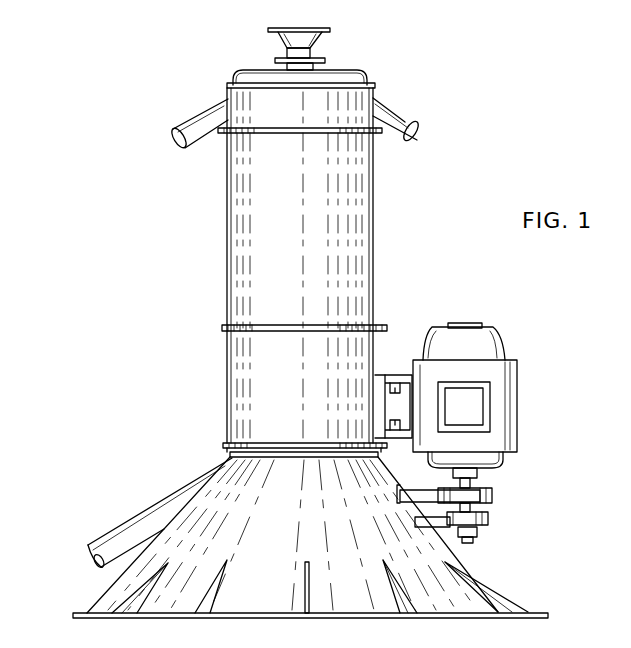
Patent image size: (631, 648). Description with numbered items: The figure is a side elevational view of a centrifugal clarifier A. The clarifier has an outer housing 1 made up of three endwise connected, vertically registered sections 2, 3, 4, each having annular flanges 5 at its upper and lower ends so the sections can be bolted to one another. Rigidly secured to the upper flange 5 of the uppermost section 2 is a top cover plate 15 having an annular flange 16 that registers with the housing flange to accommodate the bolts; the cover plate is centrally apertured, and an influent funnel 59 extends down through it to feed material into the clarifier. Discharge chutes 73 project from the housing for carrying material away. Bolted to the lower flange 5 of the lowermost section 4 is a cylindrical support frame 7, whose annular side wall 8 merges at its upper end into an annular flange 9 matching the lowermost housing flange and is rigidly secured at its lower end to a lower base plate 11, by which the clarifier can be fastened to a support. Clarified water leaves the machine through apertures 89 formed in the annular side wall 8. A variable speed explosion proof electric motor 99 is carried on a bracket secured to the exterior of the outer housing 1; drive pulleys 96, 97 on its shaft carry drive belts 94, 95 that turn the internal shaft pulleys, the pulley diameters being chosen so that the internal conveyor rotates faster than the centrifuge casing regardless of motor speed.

The outer housing 1 is at (383, 234).
The uppermost section 2 is at (363, 93).
The intermediate section 3 is at (228, 290).
The lowermost section 4 is at (228, 378).
The annular flanges 5 is at (222, 135).
The cylindrical support frame 7 is at (183, 610).
The annular side wall 8 is at (245, 602).
The annular flange 9 is at (224, 449).
The lower base plate 11 is at (73, 616).
The top cover plate 15 is at (352, 70).
The annular flange 16 is at (228, 80).
The influent funnel 59 is at (323, 28).
The discharge chutes 73 is at (193, 114).
The apertures 89 is at (120, 537).
The drive belt 94 is at (492, 495).
The drive belt 95 is at (488, 520).
The drive pulley 96 is at (485, 490).
The drive pulley 97 is at (477, 528).
The variable speed explosion proof electric motor 99 is at (515, 360).
The centrifugal clarifier A is at (212, 245).